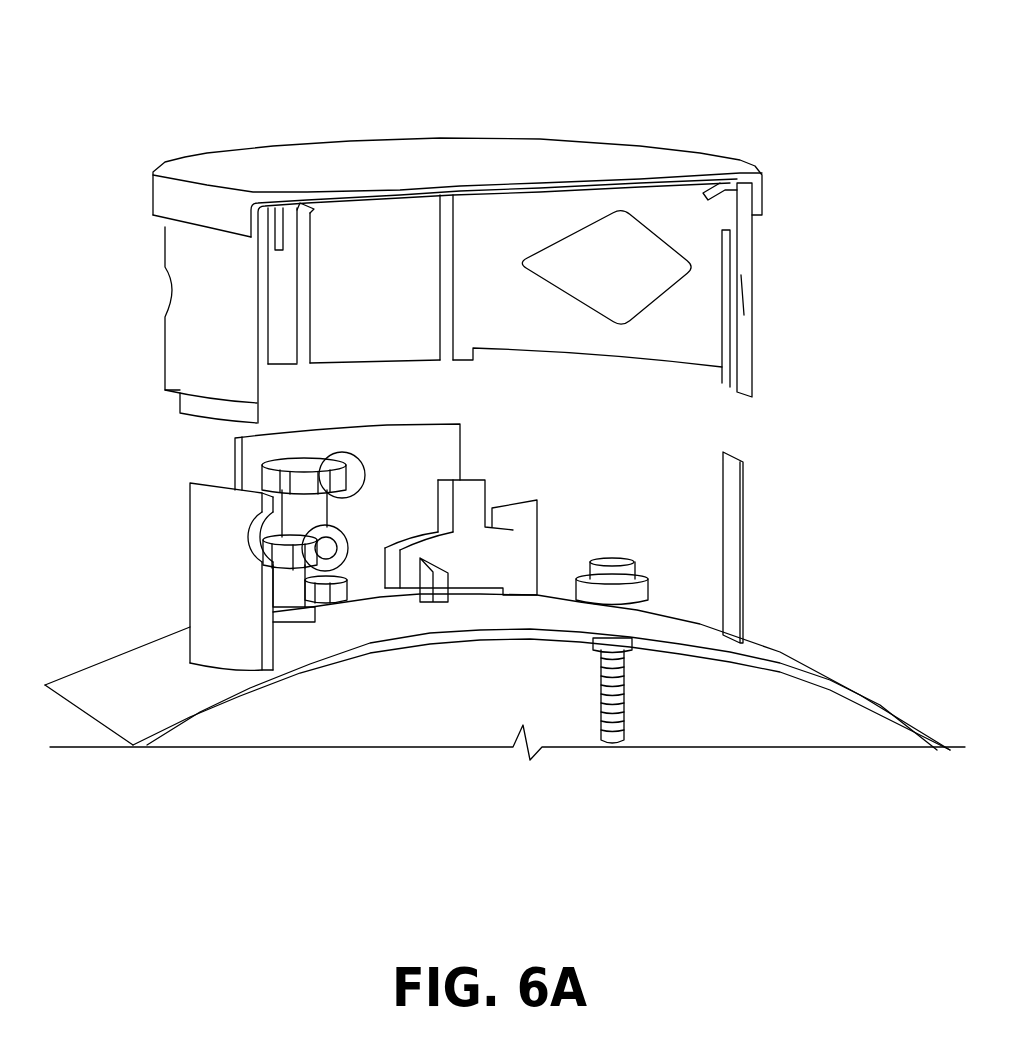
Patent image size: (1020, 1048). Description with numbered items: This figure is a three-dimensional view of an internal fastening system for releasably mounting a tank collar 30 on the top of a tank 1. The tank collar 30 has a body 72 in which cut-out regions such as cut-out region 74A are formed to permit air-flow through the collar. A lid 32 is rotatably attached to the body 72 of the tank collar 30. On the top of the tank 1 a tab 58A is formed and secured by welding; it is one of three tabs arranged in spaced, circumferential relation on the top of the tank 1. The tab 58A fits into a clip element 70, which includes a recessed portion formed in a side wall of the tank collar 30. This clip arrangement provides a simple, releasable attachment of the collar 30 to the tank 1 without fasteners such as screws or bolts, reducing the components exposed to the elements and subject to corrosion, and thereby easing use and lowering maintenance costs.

The lid 32 is at (534, 124).
The tank collar 30 is at (540, 276).
The cut-out region 74A is at (729, 263).
The body 72 is at (809, 290).
The clip element 70 is at (818, 312).
The tab 58A is at (819, 547).
The tank 1 is at (505, 677).